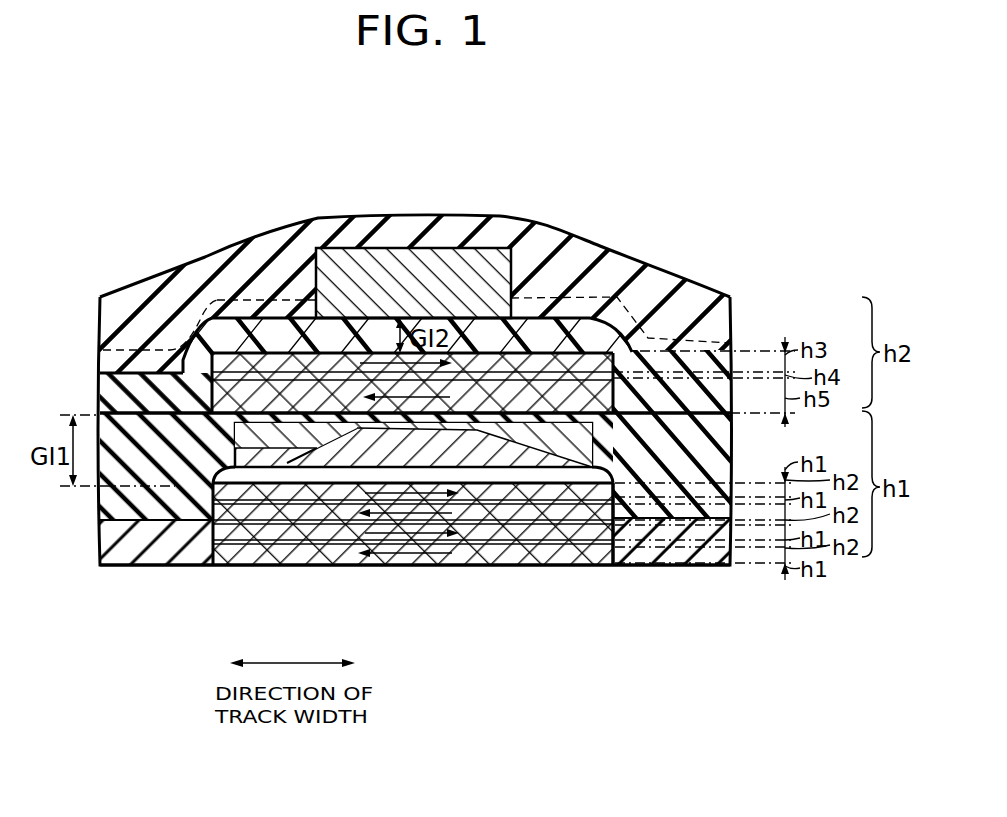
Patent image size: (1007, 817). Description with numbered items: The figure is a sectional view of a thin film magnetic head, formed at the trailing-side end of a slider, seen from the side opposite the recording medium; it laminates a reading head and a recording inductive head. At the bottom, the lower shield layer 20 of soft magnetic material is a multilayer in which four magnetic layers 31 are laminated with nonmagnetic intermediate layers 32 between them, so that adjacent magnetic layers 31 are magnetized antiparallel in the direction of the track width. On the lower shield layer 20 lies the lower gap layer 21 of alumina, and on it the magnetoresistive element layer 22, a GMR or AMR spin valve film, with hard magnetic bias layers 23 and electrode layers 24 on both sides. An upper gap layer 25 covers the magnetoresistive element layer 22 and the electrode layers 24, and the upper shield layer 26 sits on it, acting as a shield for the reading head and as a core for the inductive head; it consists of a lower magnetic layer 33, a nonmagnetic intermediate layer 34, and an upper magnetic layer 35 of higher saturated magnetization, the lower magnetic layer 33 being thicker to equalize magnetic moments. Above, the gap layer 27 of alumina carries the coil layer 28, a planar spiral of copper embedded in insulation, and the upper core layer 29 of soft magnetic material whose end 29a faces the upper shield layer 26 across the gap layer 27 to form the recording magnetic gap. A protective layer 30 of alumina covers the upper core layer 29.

The lower shield layer 20 is at (177, 528).
The lower gap layer 21 is at (117, 550).
The magnetoresistive element layer 22 is at (356, 446).
The hard magnetic bias layers 23 is at (580, 480).
The electrode layers 24 is at (607, 475).
The upper gap layer 25 is at (575, 420).
The upper shield layer (lower core layer) 26 is at (200, 394).
The gap layer (nonmagnetic material layer) 27 is at (538, 333).
The coil layer 28 is at (257, 297).
The upper core layer 29 is at (485, 244).
The end of the upper core layer 29a is at (402, 262).
The protective layer 30 is at (328, 240).
The magnetic layers 31 is at (560, 537).
The nonmagnetic intermediate layers 32 is at (498, 545).
The lower magnetic layer 33 is at (213, 316).
The nonmagnetic intermediate layer 34 is at (575, 352).
The upper magnetic layer 35 is at (614, 350).